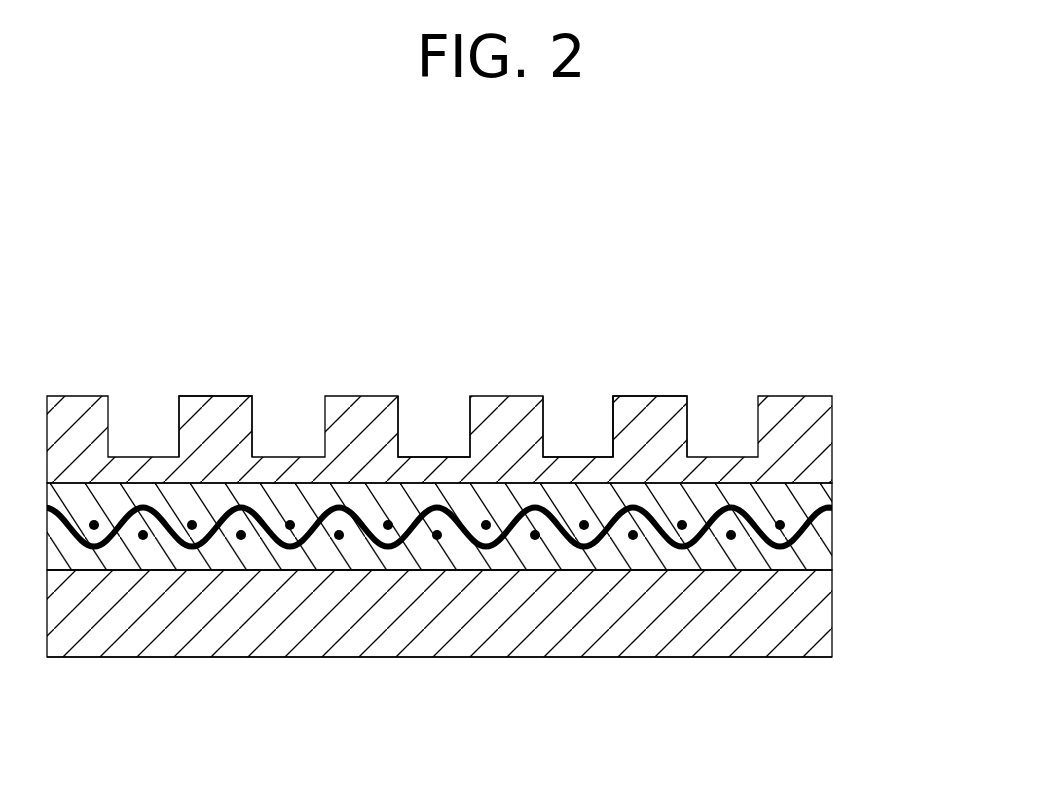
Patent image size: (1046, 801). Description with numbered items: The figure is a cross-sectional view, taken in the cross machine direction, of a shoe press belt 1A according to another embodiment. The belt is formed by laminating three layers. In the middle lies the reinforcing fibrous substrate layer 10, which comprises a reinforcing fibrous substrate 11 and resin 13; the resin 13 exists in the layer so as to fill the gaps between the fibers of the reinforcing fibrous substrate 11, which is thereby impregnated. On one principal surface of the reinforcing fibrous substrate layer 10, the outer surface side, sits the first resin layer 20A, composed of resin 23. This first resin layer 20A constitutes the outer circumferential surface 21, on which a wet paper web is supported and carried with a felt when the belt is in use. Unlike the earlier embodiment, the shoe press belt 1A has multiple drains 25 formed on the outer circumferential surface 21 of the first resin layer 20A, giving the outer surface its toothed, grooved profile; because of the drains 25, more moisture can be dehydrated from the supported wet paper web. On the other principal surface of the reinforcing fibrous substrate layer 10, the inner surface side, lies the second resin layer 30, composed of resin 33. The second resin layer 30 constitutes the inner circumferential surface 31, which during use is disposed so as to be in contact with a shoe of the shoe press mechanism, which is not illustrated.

The shoe press belt 1A is at (794, 355).
The first resin layer 20A is at (832, 436).
The outer circumferential surface 21 is at (220, 394).
The resin 23 is at (645, 453).
The drains 25 is at (575, 418).
The reinforcing fibrous substrate layer 10 is at (832, 532).
The reinforcing fibrous substrate 11 is at (533, 540).
The resin 13 is at (643, 530).
The second resin layer 30 is at (832, 627).
The inner circumferential surface 31 is at (205, 660).
The resin 33 is at (350, 610).